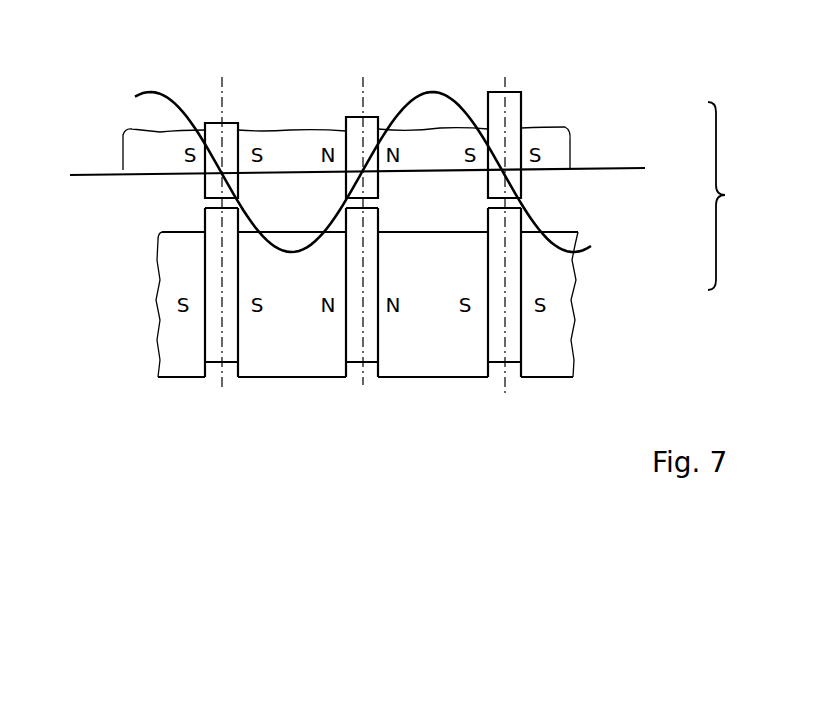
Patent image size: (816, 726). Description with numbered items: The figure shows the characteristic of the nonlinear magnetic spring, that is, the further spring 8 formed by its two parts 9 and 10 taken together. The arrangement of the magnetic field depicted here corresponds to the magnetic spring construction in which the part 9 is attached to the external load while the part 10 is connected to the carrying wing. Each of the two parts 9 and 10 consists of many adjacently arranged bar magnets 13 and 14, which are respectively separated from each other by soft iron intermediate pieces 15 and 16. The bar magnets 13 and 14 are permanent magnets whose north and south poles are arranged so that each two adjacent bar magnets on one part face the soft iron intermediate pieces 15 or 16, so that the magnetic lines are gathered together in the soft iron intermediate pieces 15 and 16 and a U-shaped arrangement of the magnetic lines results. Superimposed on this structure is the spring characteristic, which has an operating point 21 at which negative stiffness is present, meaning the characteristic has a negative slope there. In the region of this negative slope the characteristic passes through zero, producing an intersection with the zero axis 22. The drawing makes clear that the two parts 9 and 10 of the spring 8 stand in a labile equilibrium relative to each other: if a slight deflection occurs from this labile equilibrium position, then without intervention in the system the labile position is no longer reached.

The further spring 8 is at (729, 196).
The part 9 is at (600, 305).
The part 10 is at (590, 105).
The bar magnet 13 is at (435, 318).
The bar magnet 14 is at (440, 142).
The soft iron intermediate piece 15 is at (227, 337).
The soft iron intermediate piece 16 is at (363, 145).
The operating point 21 is at (222, 175).
The zero axis 22 is at (90, 175).